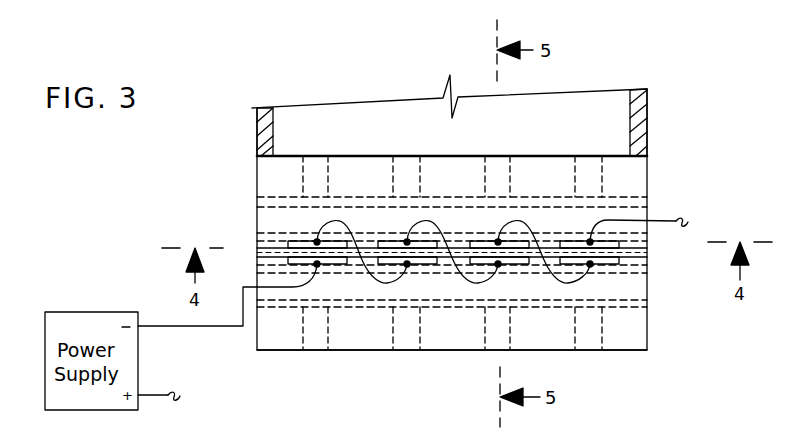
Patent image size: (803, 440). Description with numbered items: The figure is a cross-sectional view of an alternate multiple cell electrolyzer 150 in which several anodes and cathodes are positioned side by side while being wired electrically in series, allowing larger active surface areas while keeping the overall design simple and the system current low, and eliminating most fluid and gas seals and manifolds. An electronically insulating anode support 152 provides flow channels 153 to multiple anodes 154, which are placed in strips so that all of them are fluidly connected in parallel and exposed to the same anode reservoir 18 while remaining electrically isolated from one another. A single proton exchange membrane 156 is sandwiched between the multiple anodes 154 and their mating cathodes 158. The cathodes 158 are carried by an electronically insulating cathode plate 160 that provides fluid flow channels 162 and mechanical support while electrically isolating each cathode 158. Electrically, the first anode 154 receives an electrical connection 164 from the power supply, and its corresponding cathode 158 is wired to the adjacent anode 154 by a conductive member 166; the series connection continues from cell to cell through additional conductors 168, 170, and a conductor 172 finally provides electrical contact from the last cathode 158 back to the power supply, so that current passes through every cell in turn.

The anode reservoir 18 is at (648, 108).
The multiple cell electrolyzer 150 is at (228, 81).
The anode support 152 is at (257, 173).
The flow channels 153 is at (315, 163).
The anodes 154 is at (380, 240).
The proton exchange membrane 156 is at (648, 263).
The cathodes 158 is at (337, 265).
The cathode plate 160 is at (650, 328).
The fluid flow channels 162 is at (318, 342).
The electrical connection 164 is at (663, 220).
The conductive member 166 is at (520, 233).
The additional conductor 168 is at (437, 233).
The additional conductor 170 is at (340, 220).
The conductor 172 is at (163, 327).